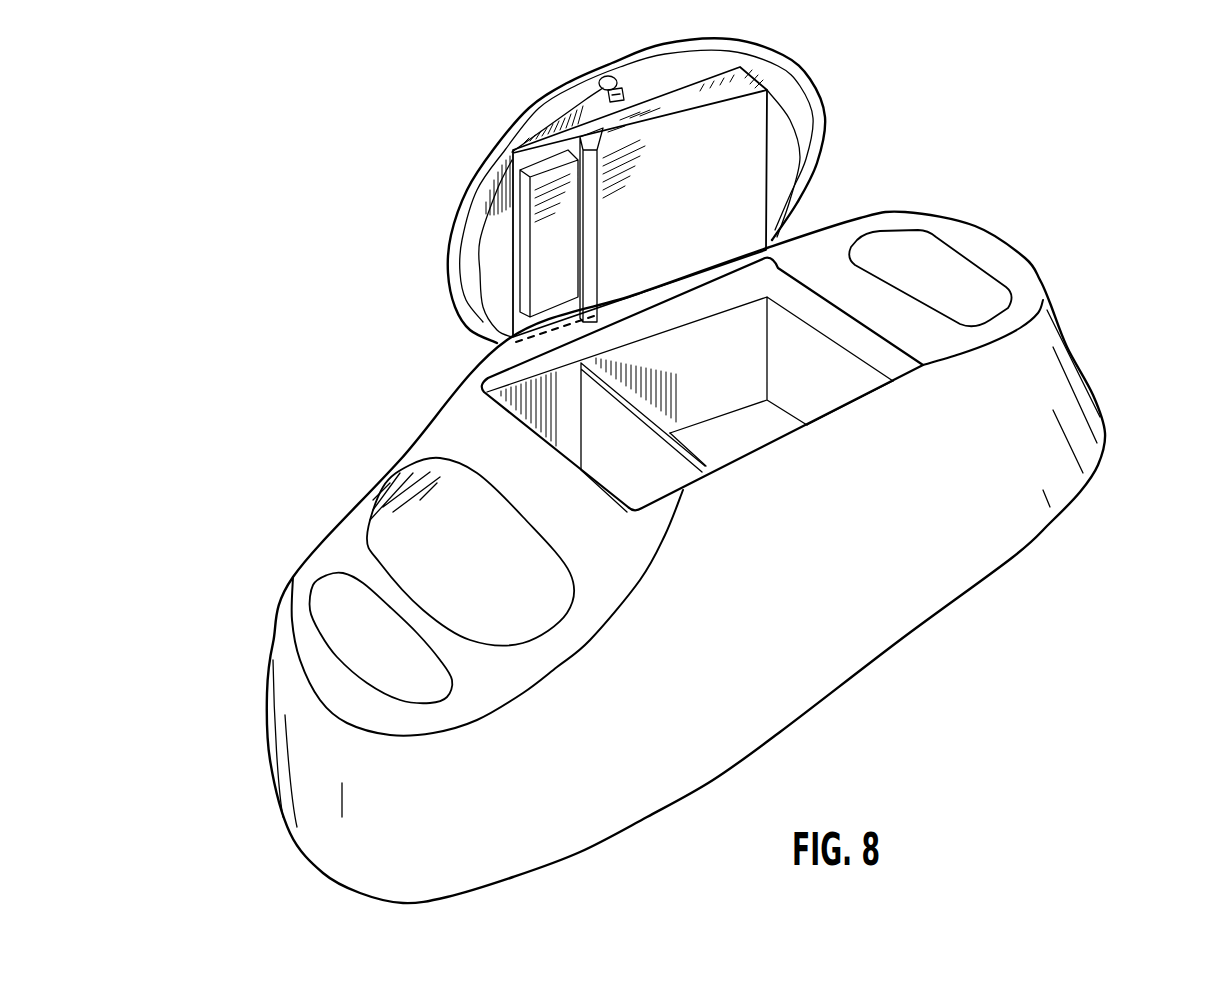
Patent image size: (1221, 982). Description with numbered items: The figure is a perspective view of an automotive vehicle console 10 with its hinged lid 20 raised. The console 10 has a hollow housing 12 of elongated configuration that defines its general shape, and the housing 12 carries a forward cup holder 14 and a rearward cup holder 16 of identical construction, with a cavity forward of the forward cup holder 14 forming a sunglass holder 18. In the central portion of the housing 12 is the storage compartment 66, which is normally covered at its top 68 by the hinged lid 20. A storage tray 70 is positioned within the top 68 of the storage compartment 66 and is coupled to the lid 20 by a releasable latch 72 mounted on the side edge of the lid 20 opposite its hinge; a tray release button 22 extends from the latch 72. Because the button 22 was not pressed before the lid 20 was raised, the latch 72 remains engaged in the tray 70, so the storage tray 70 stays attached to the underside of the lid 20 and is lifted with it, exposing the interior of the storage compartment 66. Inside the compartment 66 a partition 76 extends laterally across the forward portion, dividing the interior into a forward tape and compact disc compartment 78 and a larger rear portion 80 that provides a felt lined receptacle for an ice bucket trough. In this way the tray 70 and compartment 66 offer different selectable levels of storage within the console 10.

The automotive vehicle console 10 is at (686, 558).
The housing 12 is at (647, 800).
The forward cup holder 14 is at (390, 505).
The rearward cup holder 16 is at (868, 248).
The sunglass holder 18 is at (327, 605).
The hinged lid 20 is at (772, 51).
The tray release button 22 is at (599, 81).
The storage compartment 66 is at (710, 384).
The top of the storage compartment 68 is at (837, 413).
The storage tray 70 is at (753, 142).
The releasable latch 72 is at (614, 102).
The partition 76 is at (632, 405).
The compartment 78 is at (658, 480).
The rear portion 80 is at (747, 442).